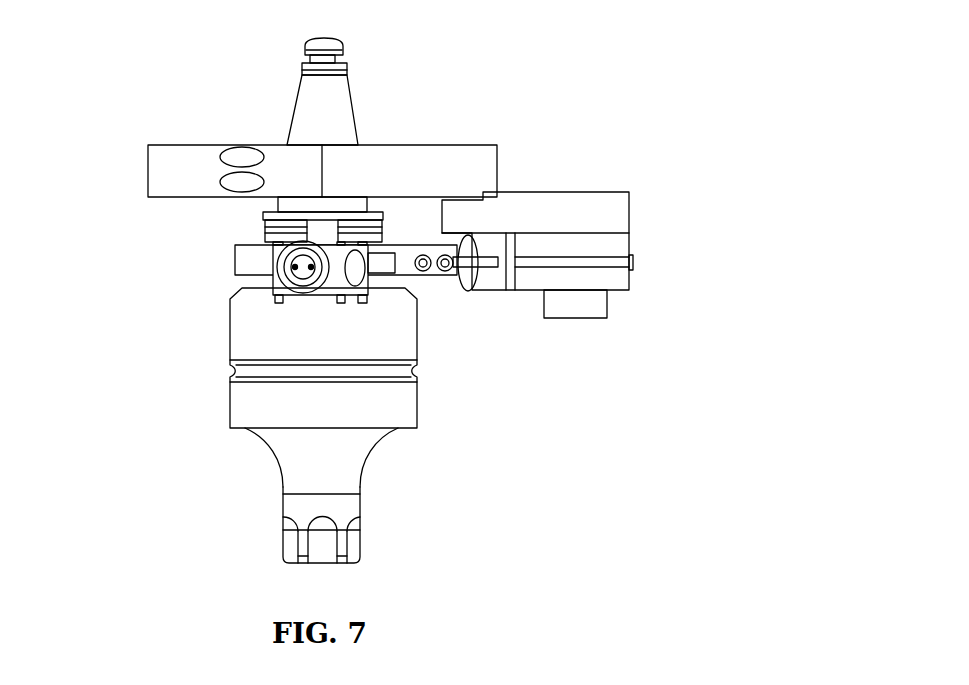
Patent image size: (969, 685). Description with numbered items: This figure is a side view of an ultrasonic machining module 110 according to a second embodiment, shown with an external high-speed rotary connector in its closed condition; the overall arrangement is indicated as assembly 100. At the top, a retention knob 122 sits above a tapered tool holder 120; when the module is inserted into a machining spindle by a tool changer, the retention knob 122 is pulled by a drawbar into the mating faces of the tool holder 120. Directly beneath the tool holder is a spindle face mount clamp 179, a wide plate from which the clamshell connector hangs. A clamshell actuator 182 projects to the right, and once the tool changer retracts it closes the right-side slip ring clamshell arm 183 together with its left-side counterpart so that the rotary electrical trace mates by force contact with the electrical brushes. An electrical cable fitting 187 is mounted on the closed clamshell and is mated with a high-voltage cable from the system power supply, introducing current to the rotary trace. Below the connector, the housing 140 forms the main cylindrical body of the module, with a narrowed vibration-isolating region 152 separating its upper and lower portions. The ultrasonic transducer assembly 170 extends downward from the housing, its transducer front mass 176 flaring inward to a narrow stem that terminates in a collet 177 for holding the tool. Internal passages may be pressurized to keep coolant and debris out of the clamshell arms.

The valve assembly 100 is at (133, 50).
The retention knob 122 is at (305, 43).
The tool holder 120 is at (366, 102).
The spindle face mount clamp 179 is at (497, 160).
The clamshell actuator 182 is at (629, 210).
The right-side slip ring clamshell arm 183 is at (235, 262).
The electrical cable fitting 187 is at (300, 297).
The housing 140 is at (347, 343).
The ultrasonic machining module 110 is at (430, 335).
The vibration-isolating region 152 is at (220, 370).
The ultrasonic transducer assembly 170 is at (385, 455).
The transducer front mass 176 is at (272, 458).
The collet 177 is at (372, 542).